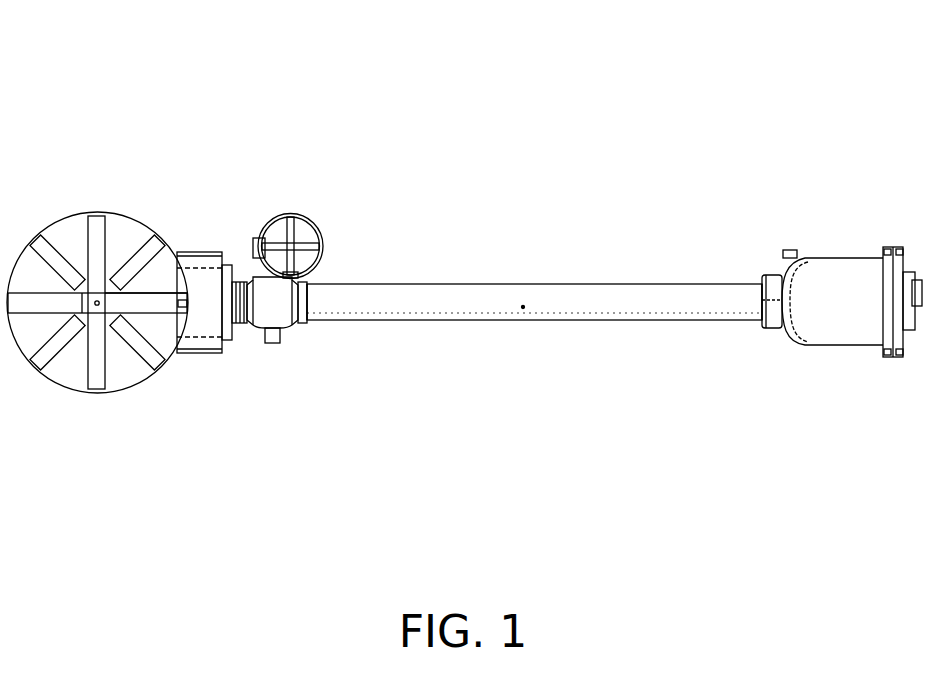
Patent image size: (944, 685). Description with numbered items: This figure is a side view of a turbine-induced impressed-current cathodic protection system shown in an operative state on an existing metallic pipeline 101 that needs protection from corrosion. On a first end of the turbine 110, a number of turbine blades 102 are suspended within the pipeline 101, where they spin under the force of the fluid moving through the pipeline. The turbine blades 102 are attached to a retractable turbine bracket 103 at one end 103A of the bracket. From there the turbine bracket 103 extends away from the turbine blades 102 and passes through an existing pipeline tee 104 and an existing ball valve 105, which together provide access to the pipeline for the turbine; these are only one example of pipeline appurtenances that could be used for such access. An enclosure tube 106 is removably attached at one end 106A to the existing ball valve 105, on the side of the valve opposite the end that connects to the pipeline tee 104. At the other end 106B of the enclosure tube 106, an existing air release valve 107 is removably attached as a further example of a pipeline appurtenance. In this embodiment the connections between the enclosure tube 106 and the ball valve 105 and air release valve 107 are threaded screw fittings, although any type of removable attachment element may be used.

The turbine 110 is at (43, 164).
The metallic pipeline 101 is at (153, 377).
The turbine blades 102 is at (100, 214).
The retractable turbine bracket 103 is at (160, 297).
The end of turbine bracket 103A is at (90, 314).
The pipeline tee 104 is at (223, 347).
The ball valve 105 is at (293, 333).
The enclosure tube 106 is at (557, 295).
The first end of enclosure tube 106A is at (310, 281).
The second end of enclosure tube 106B is at (761, 283).
The air release valve 107 is at (818, 280).